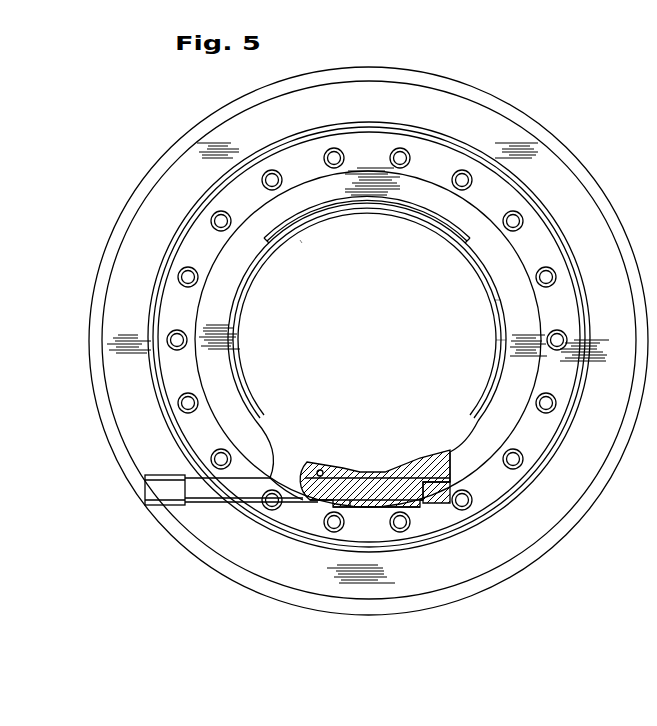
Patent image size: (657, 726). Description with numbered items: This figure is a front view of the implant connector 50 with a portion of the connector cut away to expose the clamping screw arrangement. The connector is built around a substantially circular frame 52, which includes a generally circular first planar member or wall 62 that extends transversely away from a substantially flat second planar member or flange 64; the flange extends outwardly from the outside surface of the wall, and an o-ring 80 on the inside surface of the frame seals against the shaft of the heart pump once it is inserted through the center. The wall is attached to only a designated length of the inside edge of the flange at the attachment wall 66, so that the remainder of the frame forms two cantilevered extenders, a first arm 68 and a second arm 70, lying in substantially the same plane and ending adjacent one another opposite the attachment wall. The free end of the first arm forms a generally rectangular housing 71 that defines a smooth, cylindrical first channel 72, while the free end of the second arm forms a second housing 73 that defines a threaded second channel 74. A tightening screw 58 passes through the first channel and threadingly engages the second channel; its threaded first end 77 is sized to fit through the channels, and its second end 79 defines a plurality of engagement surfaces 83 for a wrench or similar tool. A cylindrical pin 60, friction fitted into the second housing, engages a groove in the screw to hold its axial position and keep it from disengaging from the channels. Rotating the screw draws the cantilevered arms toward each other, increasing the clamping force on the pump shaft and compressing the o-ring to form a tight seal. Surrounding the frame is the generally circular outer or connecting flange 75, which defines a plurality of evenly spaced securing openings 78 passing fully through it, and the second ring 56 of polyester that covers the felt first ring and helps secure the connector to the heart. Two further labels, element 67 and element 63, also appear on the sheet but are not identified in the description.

The implant connector 50 is at (124, 124).
The frame 52 is at (146, 363).
The second ring 56 is at (104, 248).
The tightening screw 58 is at (206, 512).
The pin 60 is at (312, 505).
The wall 62 is at (557, 240).
The bore surface 63 is at (514, 312).
The flange 64 is at (470, 210).
The attachment wall 66 is at (373, 196).
The bore rings 67 is at (240, 273).
The first arm 68 is at (214, 362).
The second arm 70 is at (510, 362).
The housing 71 is at (287, 465).
The first channel 72 is at (331, 469).
The second housing 73 is at (448, 454).
The second channel 74 is at (402, 470).
The outer flange 75 is at (435, 162).
The first end 77 is at (427, 512).
The securing openings 78 is at (333, 147).
The second end 79 is at (146, 477).
The o-ring 80 is at (453, 251).
The engagement surfaces 83 is at (153, 492).